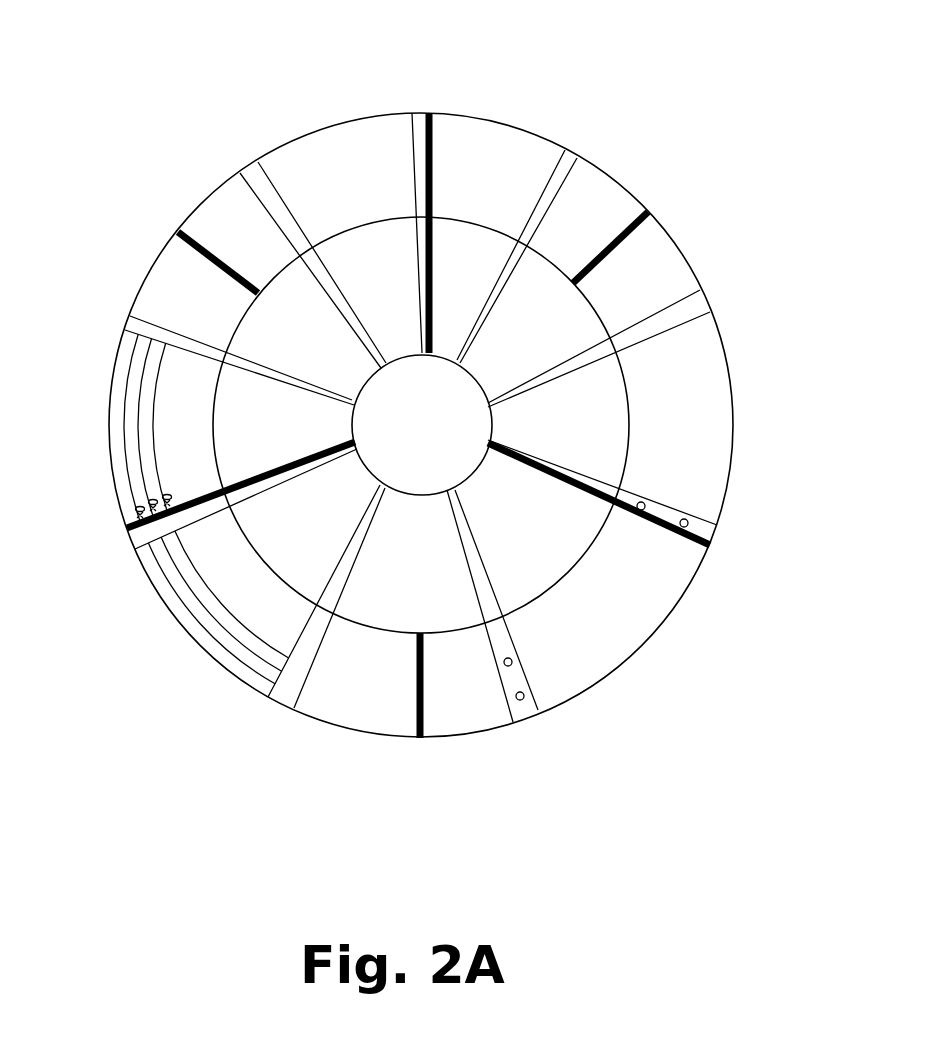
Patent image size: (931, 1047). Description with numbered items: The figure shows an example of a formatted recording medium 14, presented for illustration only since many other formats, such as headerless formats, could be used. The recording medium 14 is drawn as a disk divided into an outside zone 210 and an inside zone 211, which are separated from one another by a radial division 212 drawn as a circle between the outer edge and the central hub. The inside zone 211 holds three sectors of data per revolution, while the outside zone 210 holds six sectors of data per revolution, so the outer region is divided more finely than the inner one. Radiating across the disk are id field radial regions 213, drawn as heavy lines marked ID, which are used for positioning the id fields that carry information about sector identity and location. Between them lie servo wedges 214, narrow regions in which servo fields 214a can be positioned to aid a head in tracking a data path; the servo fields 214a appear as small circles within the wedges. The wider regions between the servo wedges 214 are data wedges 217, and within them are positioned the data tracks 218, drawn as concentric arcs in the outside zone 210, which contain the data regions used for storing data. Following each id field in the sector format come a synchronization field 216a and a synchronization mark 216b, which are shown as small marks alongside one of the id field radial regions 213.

The recording medium 14 is at (732, 387).
The outside zone 210 is at (333, 173).
The inside zone 211 is at (314, 524).
The radial division 212 is at (628, 438).
The id field radial region 213 is at (607, 248).
The servo wedge 214 is at (660, 307).
The servo field 214a is at (688, 540).
The synchronization field 216a is at (167, 503).
The synchronization mark 216b is at (163, 497).
The data wedge 217 is at (722, 340).
The data track 218 is at (154, 440).